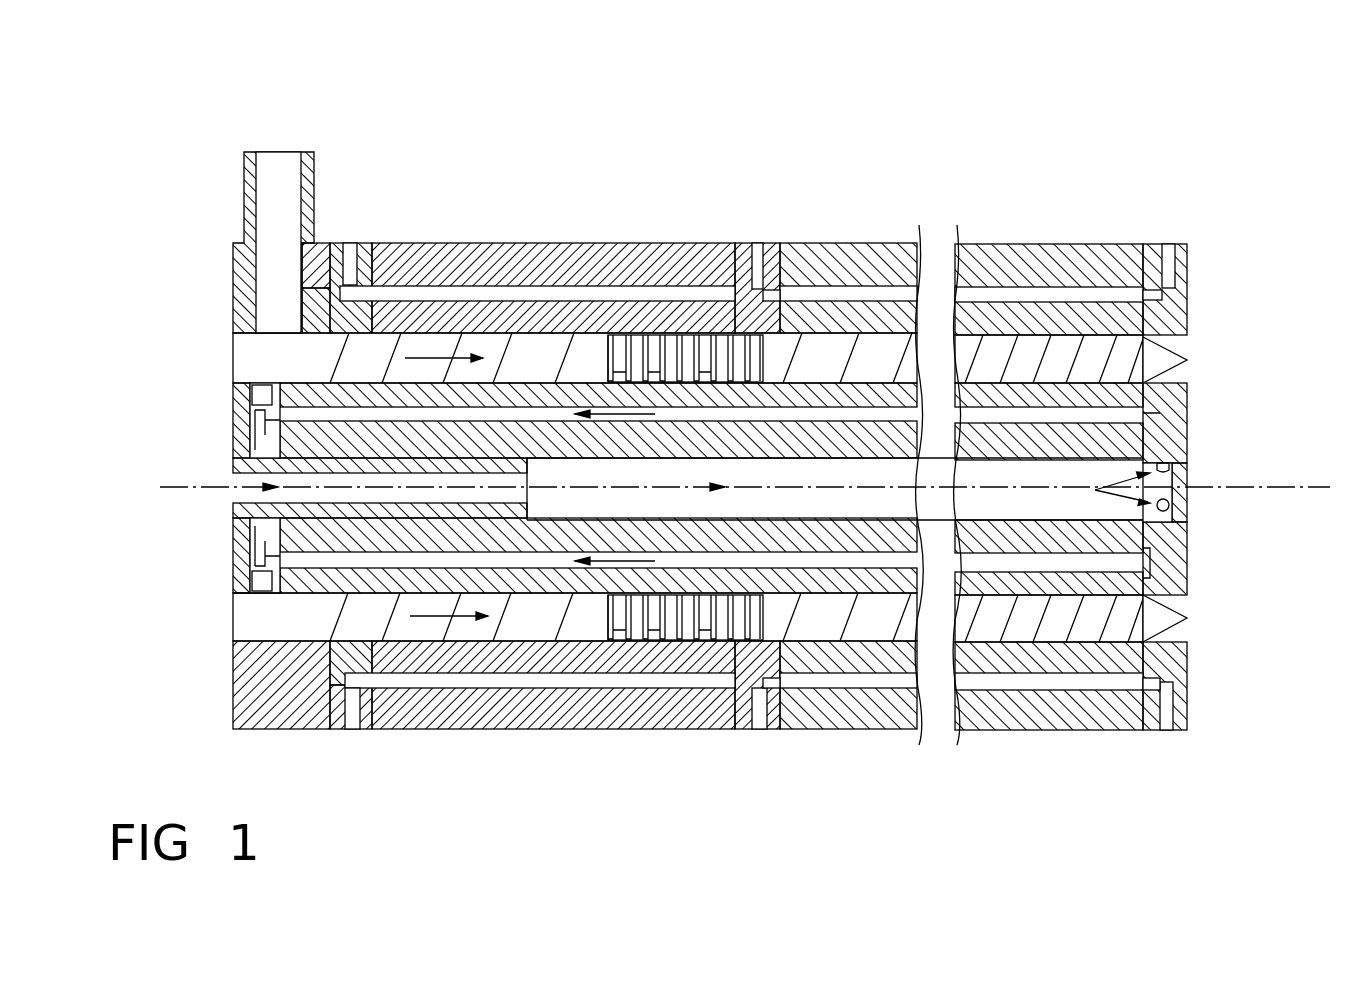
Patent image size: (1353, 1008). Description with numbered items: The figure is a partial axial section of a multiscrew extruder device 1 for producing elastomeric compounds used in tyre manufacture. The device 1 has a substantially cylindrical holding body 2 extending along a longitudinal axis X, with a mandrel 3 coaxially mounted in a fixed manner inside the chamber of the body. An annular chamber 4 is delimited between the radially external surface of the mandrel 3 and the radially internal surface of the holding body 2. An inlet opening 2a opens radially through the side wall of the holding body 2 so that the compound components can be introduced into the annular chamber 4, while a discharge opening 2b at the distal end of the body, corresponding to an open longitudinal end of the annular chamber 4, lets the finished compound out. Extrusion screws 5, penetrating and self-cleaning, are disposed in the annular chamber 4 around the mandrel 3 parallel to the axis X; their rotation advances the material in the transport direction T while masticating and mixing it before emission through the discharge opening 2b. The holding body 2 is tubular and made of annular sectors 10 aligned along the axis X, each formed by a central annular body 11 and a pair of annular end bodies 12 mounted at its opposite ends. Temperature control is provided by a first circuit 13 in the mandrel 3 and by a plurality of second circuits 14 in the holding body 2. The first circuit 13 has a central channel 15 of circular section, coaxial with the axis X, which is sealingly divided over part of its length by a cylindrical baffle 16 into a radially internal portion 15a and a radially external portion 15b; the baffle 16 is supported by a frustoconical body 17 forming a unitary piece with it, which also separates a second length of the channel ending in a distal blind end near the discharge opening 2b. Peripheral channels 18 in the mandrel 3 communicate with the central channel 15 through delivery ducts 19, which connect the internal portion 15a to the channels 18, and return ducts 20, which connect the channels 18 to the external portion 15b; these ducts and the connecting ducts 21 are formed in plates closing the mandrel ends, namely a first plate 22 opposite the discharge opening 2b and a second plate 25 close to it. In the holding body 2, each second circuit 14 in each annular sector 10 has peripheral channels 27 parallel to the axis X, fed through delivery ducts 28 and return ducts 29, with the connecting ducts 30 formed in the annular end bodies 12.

The multiscrew extruder device 1 is at (190, 177).
The holding body 2 is at (1012, 225).
The inlet opening 2a is at (275, 150).
The discharge opening 2b is at (1180, 377).
The mandrel 3 is at (1207, 452).
The annular chamber 4 is at (1190, 345).
The extrusion screws 5 is at (325, 355).
The annular sectors 10 is at (558, 212).
The central annular body 11 is at (600, 235).
The annular end bodies 12 is at (368, 240).
The first circuit 13 is at (232, 441).
The second circuits 14 is at (512, 272).
The central channel 15 is at (1175, 512).
The radially internal portion 15a is at (233, 463).
The radially external portion 15b is at (233, 511).
The cylindrical baffle 16 is at (370, 503).
The frustoconical body 17 is at (470, 507).
The peripheral channels 18 is at (990, 415).
The delivery ducts 19 is at (1185, 497).
The return ducts 20 is at (257, 425).
The connecting ducts 21 is at (1147, 417).
The first plate 22 is at (232, 583).
The second plate 25 is at (1098, 506).
The peripheral channels 27 is at (480, 290).
The delivery ducts 28 is at (350, 240).
The return ducts 29 is at (355, 717).
The connecting ducts 30 is at (735, 298).
The transport direction T is at (437, 358).
The longitudinal axis X is at (174, 488).